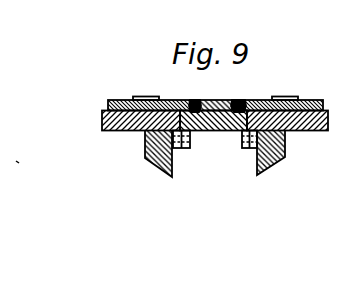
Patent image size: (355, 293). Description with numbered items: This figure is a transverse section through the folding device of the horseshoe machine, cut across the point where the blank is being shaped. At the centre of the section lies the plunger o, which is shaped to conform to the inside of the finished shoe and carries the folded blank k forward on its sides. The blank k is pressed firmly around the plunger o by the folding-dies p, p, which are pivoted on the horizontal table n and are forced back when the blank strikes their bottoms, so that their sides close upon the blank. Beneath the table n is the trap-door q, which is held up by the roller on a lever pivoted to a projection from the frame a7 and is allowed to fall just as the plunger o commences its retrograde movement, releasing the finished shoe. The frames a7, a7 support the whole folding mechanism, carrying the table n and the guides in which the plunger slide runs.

The folding-dies p is at (216, 95).
The blank k is at (217, 97).
The plunger o is at (216, 97).
The horizontal table n is at (221, 128).
The trap-door q is at (213, 131).
The frame a7 is at (215, 163).